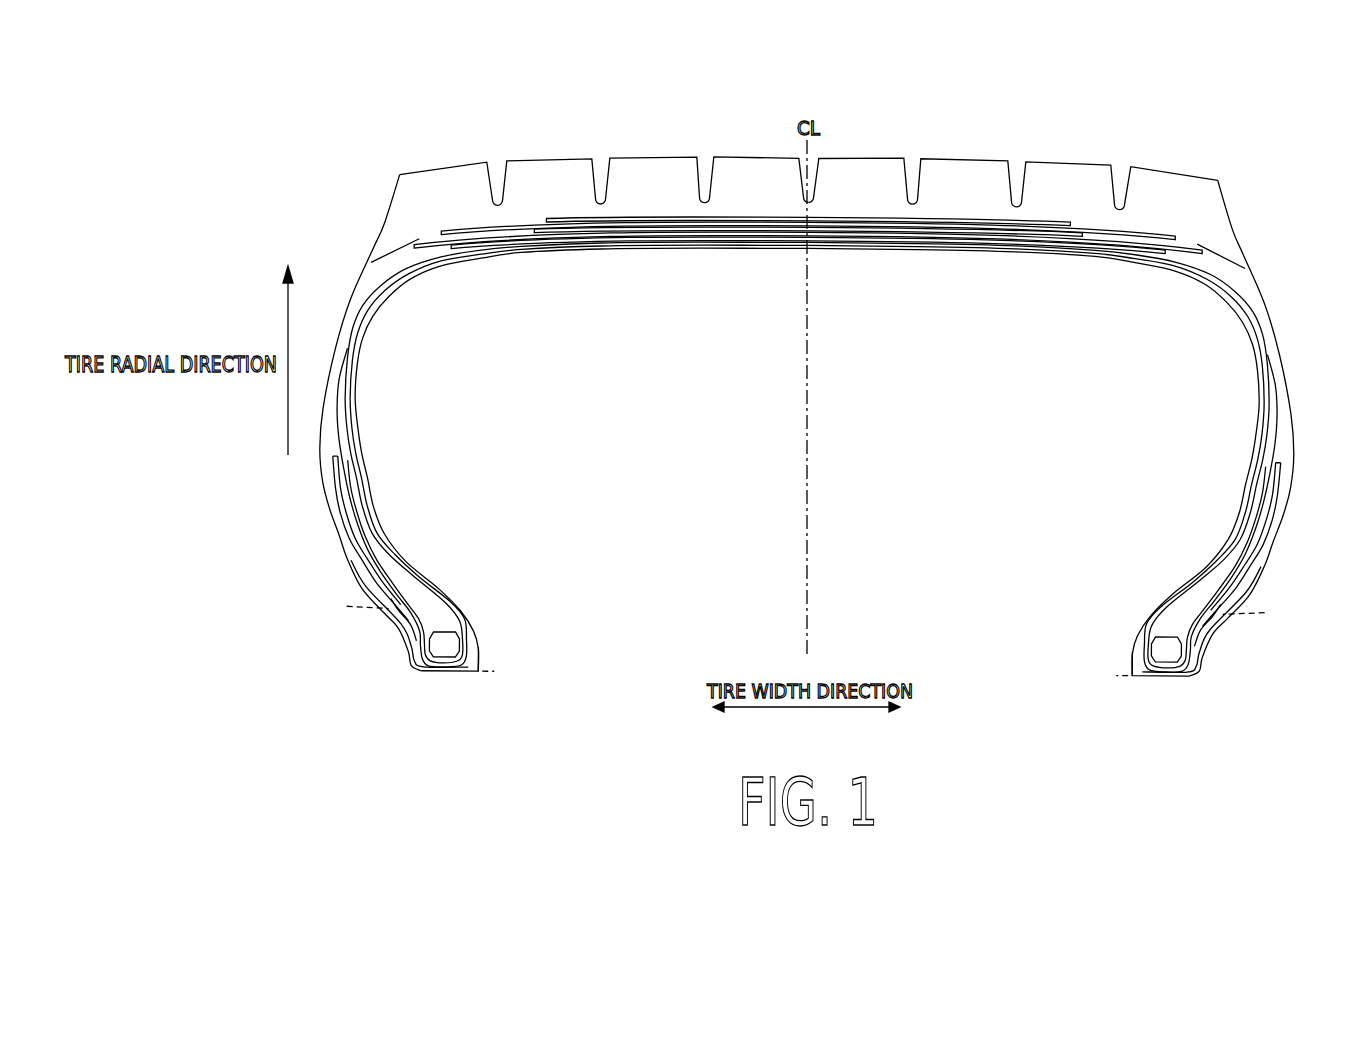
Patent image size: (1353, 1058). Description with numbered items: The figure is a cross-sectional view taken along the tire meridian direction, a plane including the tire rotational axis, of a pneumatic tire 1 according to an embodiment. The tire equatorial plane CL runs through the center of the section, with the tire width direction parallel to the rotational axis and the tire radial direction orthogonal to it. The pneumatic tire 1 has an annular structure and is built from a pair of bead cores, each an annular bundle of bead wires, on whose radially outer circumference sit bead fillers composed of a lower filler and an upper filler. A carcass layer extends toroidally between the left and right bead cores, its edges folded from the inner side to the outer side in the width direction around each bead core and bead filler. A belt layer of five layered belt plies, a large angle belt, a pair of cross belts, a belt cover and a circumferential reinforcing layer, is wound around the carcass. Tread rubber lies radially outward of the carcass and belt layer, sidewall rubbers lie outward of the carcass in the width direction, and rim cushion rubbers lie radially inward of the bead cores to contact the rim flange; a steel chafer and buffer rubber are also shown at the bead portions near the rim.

The pneumatic tire 1 is at (831, 414).